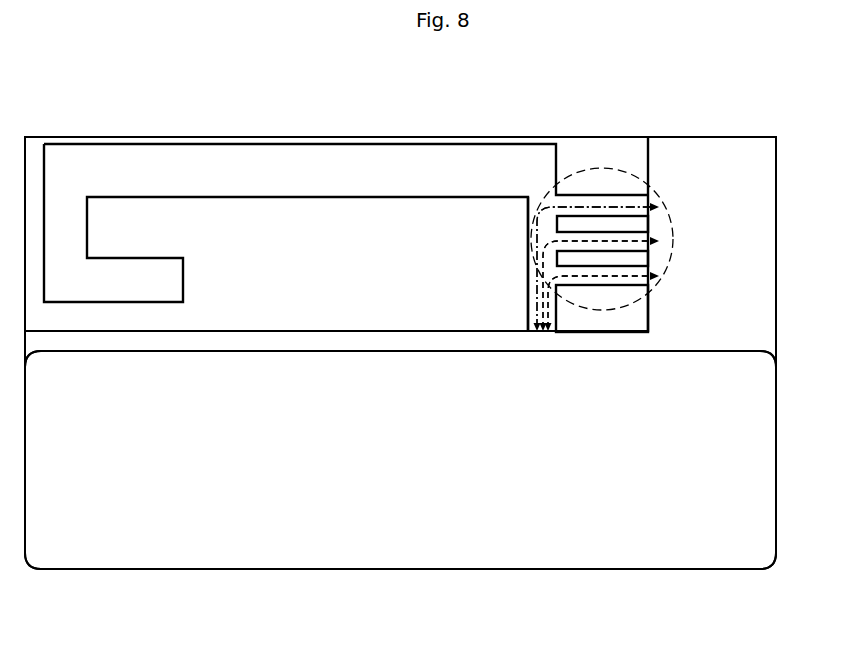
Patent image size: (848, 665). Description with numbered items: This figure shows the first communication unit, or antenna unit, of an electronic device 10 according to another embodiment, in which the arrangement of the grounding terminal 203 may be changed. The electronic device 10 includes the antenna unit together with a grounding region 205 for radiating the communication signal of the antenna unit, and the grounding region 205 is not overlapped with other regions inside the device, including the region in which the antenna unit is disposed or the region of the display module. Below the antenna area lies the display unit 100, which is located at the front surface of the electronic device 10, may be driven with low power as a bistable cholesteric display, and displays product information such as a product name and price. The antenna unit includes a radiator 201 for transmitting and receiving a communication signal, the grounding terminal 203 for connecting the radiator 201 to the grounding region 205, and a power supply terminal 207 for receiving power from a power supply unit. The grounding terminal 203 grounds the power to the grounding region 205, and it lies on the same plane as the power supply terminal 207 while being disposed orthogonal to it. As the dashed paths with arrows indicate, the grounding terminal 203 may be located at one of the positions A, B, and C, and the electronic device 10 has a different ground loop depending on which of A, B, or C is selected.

The electronic device 10 is at (57, 75).
The display unit 100 is at (409, 550).
The radiator 201 is at (347, 165).
The grounding terminal 203 is at (603, 168).
The grounding region 205 is at (713, 163).
The power supply terminal 207 is at (527, 300).
The grounding terminal position A is at (665, 272).
The grounding terminal position B is at (663, 236).
The grounding terminal position C is at (663, 200).